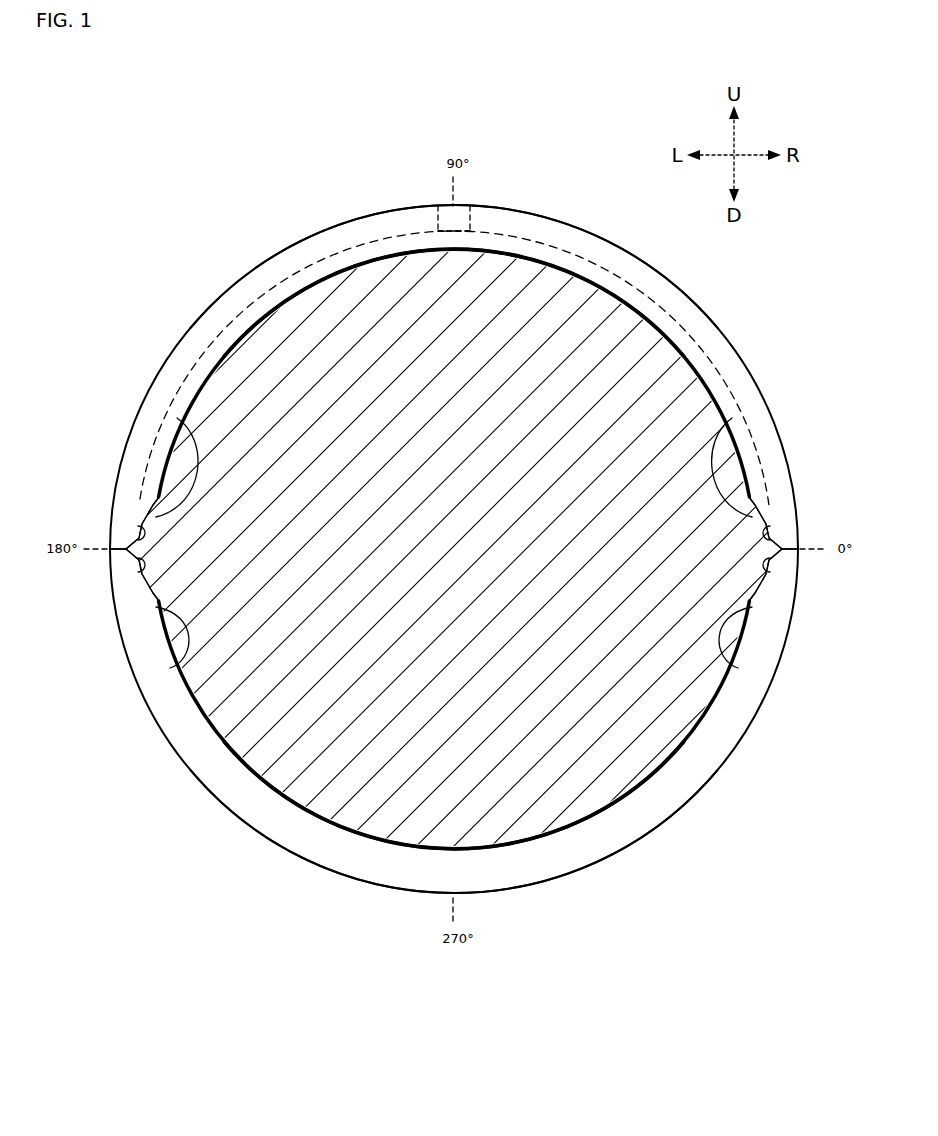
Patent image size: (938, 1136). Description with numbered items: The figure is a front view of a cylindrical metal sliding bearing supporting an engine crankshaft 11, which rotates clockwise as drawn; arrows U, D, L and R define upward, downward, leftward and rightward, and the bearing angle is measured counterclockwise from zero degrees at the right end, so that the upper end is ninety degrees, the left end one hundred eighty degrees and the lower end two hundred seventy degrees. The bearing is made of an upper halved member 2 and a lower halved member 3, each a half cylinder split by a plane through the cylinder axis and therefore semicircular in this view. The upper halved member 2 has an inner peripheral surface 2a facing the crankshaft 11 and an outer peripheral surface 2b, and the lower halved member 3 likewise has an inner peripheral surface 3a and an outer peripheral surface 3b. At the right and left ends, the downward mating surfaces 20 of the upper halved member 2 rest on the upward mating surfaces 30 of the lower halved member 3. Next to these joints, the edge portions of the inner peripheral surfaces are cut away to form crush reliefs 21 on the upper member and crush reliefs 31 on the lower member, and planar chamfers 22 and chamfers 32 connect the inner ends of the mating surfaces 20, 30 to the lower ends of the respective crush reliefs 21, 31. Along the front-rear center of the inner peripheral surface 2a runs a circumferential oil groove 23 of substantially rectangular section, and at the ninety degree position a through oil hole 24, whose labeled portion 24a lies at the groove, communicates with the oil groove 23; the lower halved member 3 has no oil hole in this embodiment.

The upper halved member 2 is at (369, 200).
The inner peripheral surface of the upper halved member 2a is at (315, 258).
The outer peripheral surface of the upper halved member 2b is at (318, 233).
The lower halved member 3 is at (371, 905).
The inner peripheral surface of the lower halved member 3a is at (312, 814).
The outer peripheral surface of second member 3b is at (308, 864).
The crankshaft 11 is at (476, 742).
The mating surfaces 20 is at (114, 562).
The crush reliefs 21 is at (177, 418).
The chamfers 22 is at (150, 506).
The oil groove 23 is at (548, 258).
The oil hole 24 is at (444, 208).
The end face of protrusion 24a is at (459, 205).
The mating surfaces 30 is at (122, 540).
The crush reliefs 31 is at (170, 668).
The chamfers 32 is at (153, 585).